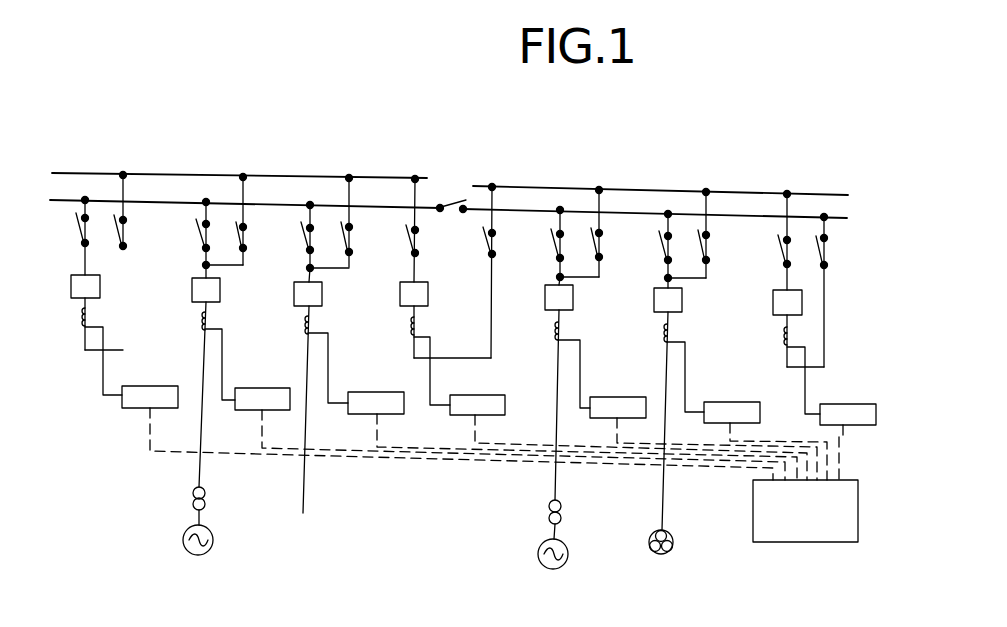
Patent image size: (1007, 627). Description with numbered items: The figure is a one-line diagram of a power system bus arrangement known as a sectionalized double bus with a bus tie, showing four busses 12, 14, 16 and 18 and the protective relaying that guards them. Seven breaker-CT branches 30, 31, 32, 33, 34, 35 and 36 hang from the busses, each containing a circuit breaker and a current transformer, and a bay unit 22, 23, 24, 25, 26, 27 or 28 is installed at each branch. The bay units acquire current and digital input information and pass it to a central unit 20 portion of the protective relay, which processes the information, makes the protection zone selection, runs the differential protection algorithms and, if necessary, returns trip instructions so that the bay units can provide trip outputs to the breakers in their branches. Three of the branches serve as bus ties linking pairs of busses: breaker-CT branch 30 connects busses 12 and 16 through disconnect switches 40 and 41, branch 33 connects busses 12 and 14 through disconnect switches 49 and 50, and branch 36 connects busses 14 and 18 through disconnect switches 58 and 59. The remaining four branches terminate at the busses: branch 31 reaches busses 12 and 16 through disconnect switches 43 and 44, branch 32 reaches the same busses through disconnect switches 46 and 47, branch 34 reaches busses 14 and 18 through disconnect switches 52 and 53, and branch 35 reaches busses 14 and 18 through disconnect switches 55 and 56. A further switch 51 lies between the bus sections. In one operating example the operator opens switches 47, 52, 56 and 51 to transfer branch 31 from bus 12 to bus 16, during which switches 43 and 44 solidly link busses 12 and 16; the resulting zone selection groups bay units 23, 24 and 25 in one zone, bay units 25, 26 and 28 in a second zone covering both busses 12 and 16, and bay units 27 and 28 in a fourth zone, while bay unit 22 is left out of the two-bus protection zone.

The bus 12 is at (147, 174).
The bus 14 is at (538, 185).
The bus 16 is at (172, 200).
The bus 18 is at (647, 214).
The central unit 20 is at (797, 543).
The bay unit 22 is at (130, 410).
The bay unit 23 is at (247, 410).
The bay unit 24 is at (352, 413).
The bay unit 25 is at (462, 417).
The bay unit 26 is at (603, 418).
The bay unit 27 is at (716, 424).
The bay unit 28 is at (860, 426).
The breaker-CT branch 30 is at (72, 288).
The breaker-CT branch 31 is at (191, 296).
The breaker-CT branch 32 is at (294, 297).
The breaker-CT branch 33 is at (400, 297).
The breaker-CT branch 34 is at (547, 300).
The breaker-CT branch 35 is at (655, 305).
The breaker-CT branch 36 is at (773, 304).
The disconnect switch 40 is at (82, 228).
The disconnect switch 41 is at (126, 234).
The disconnect switch 43 is at (197, 238).
The disconnect switch 44 is at (246, 234).
The disconnect switch 46 is at (307, 230).
The disconnect switch 47 is at (348, 240).
The disconnect switch 49 is at (410, 235).
The disconnect switch 50 is at (488, 236).
The switch 51 is at (450, 202).
The disconnect switch 52 is at (548, 238).
The disconnect switch 53 is at (598, 236).
The disconnect switch 55 is at (662, 238).
The disconnect switch 56 is at (707, 238).
The disconnect switch 58 is at (785, 242).
The disconnect switch 59 is at (826, 242).